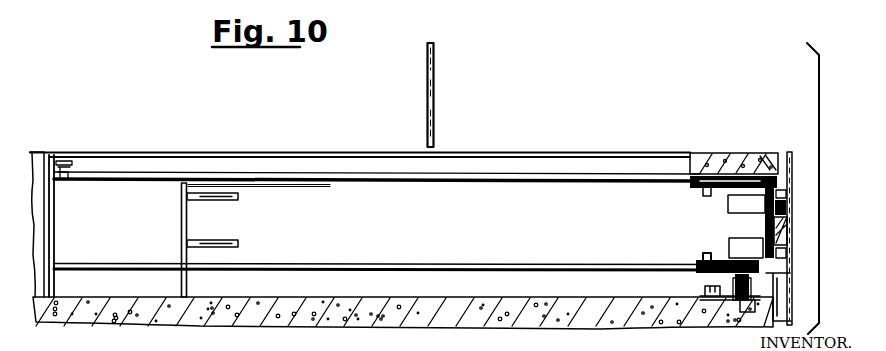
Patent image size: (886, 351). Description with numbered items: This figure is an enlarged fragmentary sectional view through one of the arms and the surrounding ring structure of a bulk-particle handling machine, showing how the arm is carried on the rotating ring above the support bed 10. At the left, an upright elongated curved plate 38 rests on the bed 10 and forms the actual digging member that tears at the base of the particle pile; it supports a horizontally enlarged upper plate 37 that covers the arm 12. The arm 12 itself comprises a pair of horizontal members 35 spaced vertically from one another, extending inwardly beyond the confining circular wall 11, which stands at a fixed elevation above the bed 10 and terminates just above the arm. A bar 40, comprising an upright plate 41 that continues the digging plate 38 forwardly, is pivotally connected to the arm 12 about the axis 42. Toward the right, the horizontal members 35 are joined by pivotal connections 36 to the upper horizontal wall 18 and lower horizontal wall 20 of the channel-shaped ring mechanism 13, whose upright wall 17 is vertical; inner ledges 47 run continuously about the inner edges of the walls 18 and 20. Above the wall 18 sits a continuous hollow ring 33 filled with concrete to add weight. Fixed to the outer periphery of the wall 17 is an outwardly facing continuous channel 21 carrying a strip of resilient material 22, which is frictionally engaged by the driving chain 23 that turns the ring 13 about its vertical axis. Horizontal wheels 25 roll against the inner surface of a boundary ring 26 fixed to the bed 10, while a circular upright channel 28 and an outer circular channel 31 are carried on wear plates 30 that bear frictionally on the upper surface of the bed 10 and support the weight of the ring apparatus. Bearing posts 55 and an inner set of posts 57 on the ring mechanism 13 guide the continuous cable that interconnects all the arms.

The support bed 10 is at (479, 298).
The confining circular wall 11 is at (432, 91).
The rigid arm 12 is at (496, 180).
The ring mechanism 13 is at (697, 195).
The upright wall 17 is at (793, 191).
The upper horizontal wall 18 is at (706, 197).
The lower horizontal wall 20 is at (705, 262).
The continuous channel 21 is at (795, 240).
The strip of resilient material 22 is at (760, 230).
The driving chain 23 is at (795, 222).
The horizontal wheels 25 is at (795, 198).
The boundary ring 26 is at (794, 152).
The circular upright channel 28 is at (722, 304).
The wear plates 30 is at (700, 298).
The outer circular channel 31 is at (787, 292).
The continuous hollow ring 33 is at (691, 154).
The horizontal members 35 is at (418, 182).
The pivotal connections 36 is at (766, 154).
The upper plate 37 is at (236, 152).
The upright curved plate 38 is at (43, 160).
The bar 40 is at (236, 231).
The upright plate 41 is at (182, 216).
The pivot axis 42 is at (70, 160).
The inner ledges 47 is at (708, 253).
The bearing posts 55 is at (745, 312).
The inner posts 57 is at (712, 292).